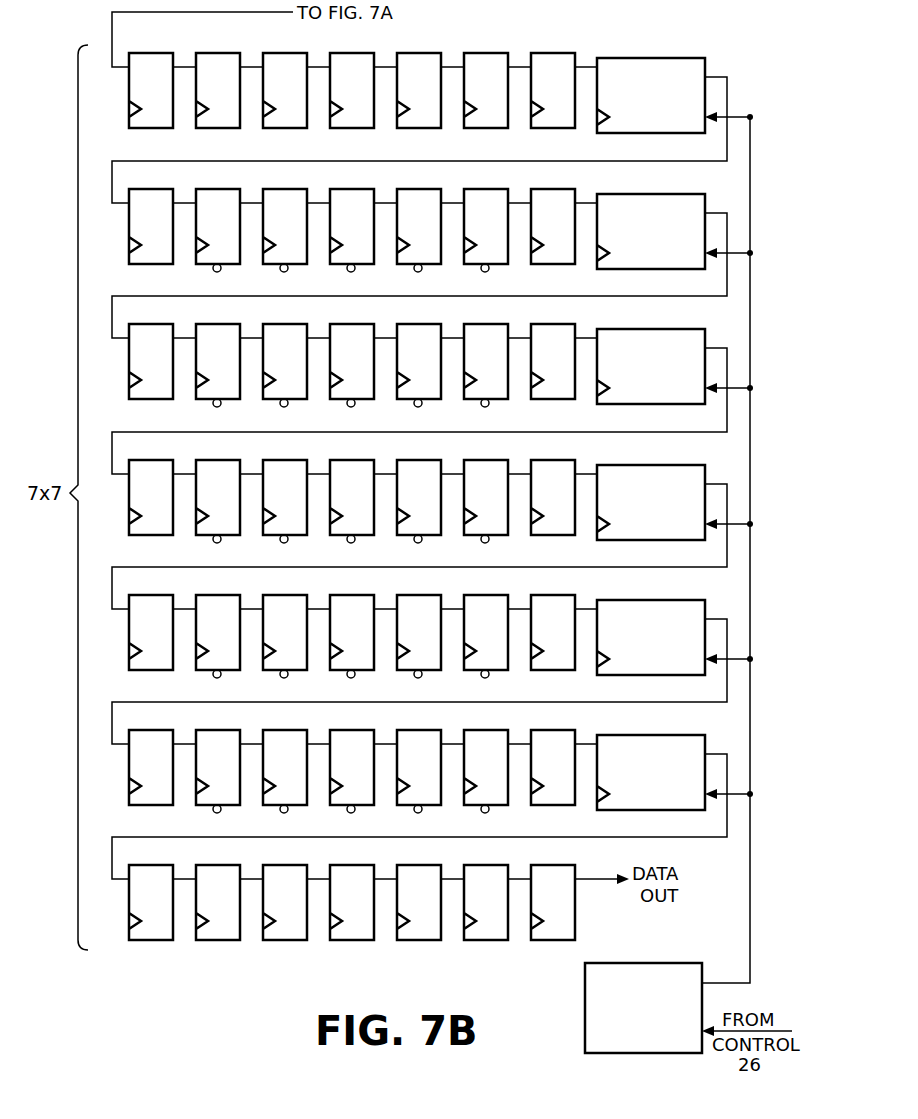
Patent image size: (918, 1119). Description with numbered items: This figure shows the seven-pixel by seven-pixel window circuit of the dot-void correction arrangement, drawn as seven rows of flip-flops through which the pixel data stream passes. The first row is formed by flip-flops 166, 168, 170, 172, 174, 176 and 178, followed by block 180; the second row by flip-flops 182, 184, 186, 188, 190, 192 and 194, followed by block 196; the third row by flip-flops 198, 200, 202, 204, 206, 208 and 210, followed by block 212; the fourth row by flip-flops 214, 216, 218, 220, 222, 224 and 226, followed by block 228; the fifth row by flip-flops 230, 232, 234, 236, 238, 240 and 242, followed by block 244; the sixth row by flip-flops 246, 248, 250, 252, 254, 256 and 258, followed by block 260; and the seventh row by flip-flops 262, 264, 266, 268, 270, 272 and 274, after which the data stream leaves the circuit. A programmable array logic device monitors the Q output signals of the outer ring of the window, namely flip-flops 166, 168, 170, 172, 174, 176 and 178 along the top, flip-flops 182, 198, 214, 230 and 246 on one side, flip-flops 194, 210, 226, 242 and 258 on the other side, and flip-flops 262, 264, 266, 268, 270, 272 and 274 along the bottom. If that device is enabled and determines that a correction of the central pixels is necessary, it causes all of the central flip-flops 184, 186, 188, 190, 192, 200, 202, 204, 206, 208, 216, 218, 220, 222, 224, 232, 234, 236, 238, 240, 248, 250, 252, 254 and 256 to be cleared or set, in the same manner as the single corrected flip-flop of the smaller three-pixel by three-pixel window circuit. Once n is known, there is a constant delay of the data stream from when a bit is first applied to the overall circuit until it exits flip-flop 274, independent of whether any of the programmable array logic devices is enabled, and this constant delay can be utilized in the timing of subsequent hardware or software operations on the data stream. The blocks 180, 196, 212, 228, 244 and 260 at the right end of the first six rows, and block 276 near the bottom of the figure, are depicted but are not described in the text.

The flip-flop 166 is at (163, 53).
The flip-flop 168 is at (230, 53).
The flip-flop 170 is at (297, 53).
The flip-flop 172 is at (364, 53).
The flip-flop 174 is at (431, 53).
The flip-flop 176 is at (498, 53).
The flip-flop 178 is at (565, 53).
The (n-7) register 180 is at (637, 58).
The flip-flop 182 is at (163, 189).
The flip-flop 184 is at (230, 189).
The flip-flop 186 is at (297, 189).
The flip-flop 188 is at (364, 189).
The flip-flop 190 is at (431, 189).
The flip-flop 192 is at (498, 189).
The flip-flop 194 is at (565, 189).
The (n-7) register 196 is at (637, 194).
The flip-flop 198 is at (163, 324).
The flip-flop 200 is at (230, 324).
The flip-flop 202 is at (297, 324).
The flip-flop 204 is at (364, 324).
The flip-flop 206 is at (431, 324).
The flip-flop 208 is at (498, 324).
The flip-flop 210 is at (565, 324).
The (n-7) register 212 is at (637, 329).
The flip-flop 214 is at (163, 460).
The flip-flop 216 is at (230, 460).
The flip-flop 218 is at (297, 460).
The flip-flop 220 is at (364, 460).
The flip-flop 222 is at (431, 460).
The flip-flop 224 is at (498, 460).
The flip-flop 226 is at (565, 460).
The (n-7) register 228 is at (637, 465).
The flip-flop 230 is at (163, 595).
The flip-flop 232 is at (230, 595).
The flip-flop 234 is at (297, 595).
The flip-flop 236 is at (364, 595).
The flip-flop 238 is at (431, 595).
The flip-flop 240 is at (498, 595).
The flip-flop 242 is at (565, 595).
The (n-7) register 244 is at (637, 600).
The flip-flop 246 is at (163, 730).
The flip-flop 248 is at (230, 730).
The flip-flop 250 is at (297, 730).
The flip-flop 252 is at (364, 730).
The flip-flop 254 is at (431, 730).
The flip-flop 256 is at (498, 730).
The flip-flop 258 is at (565, 730).
The (n-7) register 260 is at (637, 735).
The flip-flop 262 is at (163, 865).
The flip-flop 264 is at (230, 865).
The flip-flop 266 is at (297, 865).
The flip-flop 268 is at (364, 865).
The flip-flop 270 is at (431, 865).
The flip-flop 272 is at (498, 865).
The flip-flop 274 is at (565, 865).
The modulo (n-7) counter 276 is at (639, 963).